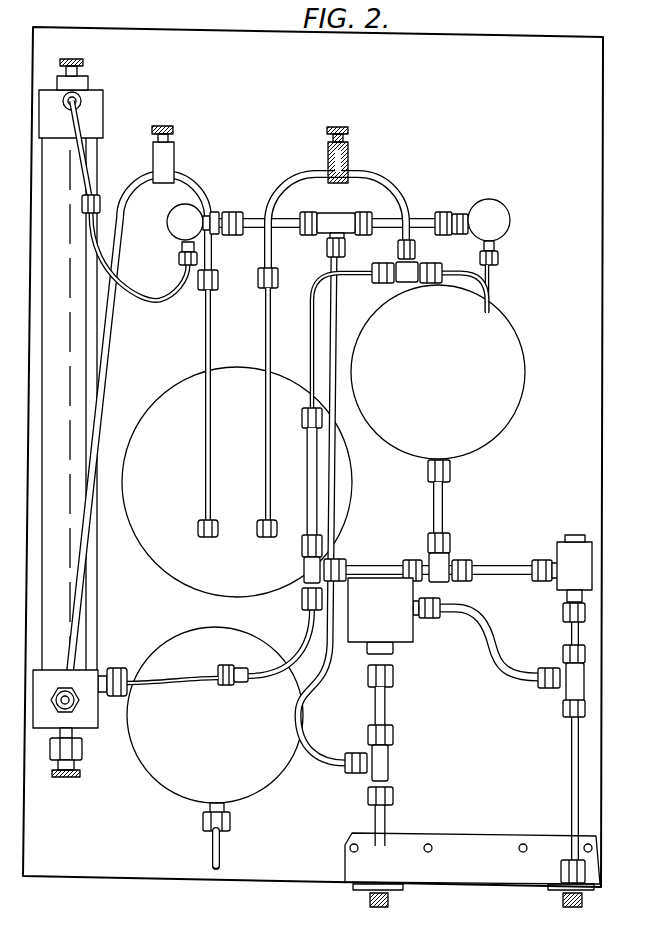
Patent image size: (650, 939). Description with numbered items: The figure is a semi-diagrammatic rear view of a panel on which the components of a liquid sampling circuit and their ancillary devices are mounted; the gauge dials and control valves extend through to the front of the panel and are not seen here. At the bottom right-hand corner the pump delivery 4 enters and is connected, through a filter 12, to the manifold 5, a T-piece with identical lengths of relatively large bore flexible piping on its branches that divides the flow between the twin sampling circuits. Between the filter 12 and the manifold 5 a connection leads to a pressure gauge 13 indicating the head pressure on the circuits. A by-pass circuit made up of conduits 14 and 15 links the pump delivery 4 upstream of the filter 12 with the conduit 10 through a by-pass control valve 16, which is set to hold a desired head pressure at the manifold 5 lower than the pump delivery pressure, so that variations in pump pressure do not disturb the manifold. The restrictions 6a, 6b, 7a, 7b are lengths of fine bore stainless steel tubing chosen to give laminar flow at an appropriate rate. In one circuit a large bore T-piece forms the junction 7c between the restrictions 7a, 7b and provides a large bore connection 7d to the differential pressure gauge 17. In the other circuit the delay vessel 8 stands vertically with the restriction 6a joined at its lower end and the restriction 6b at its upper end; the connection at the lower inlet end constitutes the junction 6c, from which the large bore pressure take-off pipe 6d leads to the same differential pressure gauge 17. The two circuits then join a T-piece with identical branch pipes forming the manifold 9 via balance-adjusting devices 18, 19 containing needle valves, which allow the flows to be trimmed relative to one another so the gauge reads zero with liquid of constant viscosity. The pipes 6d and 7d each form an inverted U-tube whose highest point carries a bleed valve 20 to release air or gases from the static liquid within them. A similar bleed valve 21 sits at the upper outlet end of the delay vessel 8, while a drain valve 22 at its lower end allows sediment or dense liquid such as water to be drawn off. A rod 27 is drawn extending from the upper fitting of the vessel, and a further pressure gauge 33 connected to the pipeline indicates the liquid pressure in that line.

The pump delivery 4 is at (570, 817).
The manifold 5 is at (310, 570).
The restriction 6a is at (183, 677).
The restriction 6b is at (141, 297).
The junction 6c is at (64, 688).
The pressure take-off pipe 6d is at (100, 390).
The restriction 7a is at (311, 342).
The restriction 7b is at (488, 289).
The junction 7c is at (410, 271).
The connection 7d is at (264, 319).
The delay vessel 8 is at (60, 362).
The manifold 9 is at (336, 218).
The conduit 10 is at (325, 655).
The filter 12 is at (565, 553).
The pressure gauge 13 is at (502, 398).
The conduit 14 is at (492, 657).
The conduit 15 is at (385, 705).
The by-pass control valve 16 is at (395, 626).
The differential pressure gauge 17 is at (180, 397).
The balance-adjusting device 18 is at (180, 224).
The balance-adjusting device 19 is at (478, 212).
The bleed valve 20 is at (165, 155).
The bleed valve 21 is at (80, 67).
The drain valve 22 is at (82, 748).
The rod 27 is at (83, 155).
The pressure gauge 33 is at (147, 766).